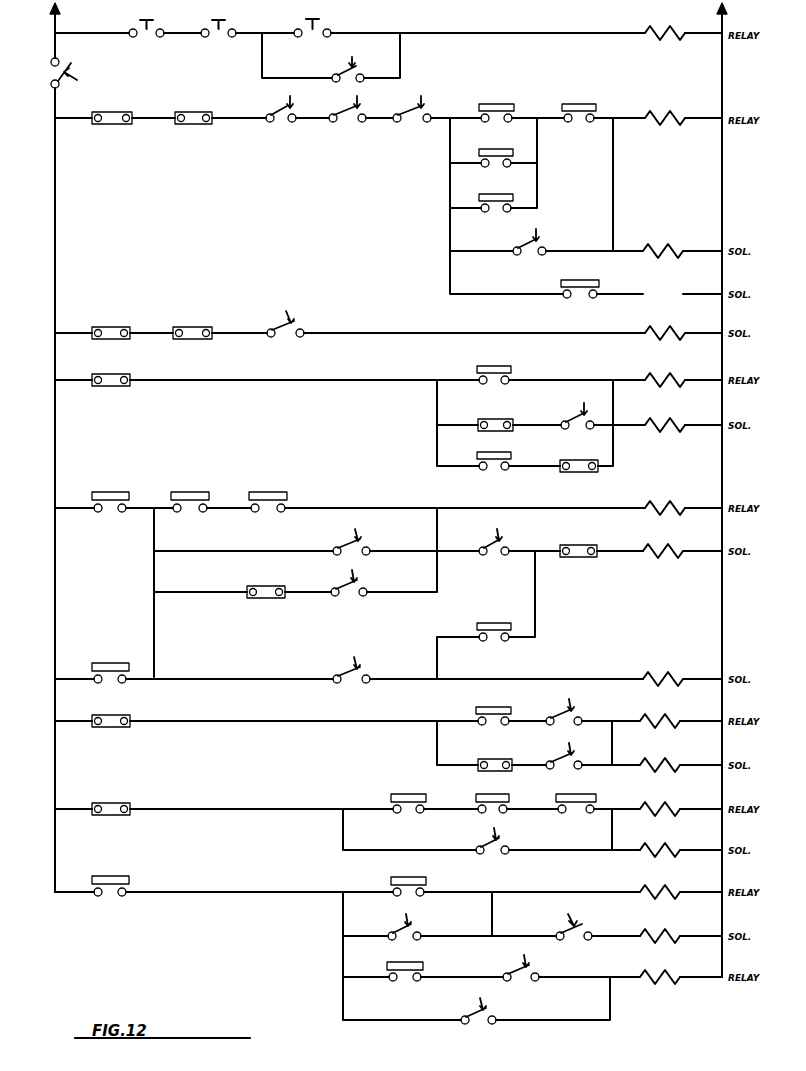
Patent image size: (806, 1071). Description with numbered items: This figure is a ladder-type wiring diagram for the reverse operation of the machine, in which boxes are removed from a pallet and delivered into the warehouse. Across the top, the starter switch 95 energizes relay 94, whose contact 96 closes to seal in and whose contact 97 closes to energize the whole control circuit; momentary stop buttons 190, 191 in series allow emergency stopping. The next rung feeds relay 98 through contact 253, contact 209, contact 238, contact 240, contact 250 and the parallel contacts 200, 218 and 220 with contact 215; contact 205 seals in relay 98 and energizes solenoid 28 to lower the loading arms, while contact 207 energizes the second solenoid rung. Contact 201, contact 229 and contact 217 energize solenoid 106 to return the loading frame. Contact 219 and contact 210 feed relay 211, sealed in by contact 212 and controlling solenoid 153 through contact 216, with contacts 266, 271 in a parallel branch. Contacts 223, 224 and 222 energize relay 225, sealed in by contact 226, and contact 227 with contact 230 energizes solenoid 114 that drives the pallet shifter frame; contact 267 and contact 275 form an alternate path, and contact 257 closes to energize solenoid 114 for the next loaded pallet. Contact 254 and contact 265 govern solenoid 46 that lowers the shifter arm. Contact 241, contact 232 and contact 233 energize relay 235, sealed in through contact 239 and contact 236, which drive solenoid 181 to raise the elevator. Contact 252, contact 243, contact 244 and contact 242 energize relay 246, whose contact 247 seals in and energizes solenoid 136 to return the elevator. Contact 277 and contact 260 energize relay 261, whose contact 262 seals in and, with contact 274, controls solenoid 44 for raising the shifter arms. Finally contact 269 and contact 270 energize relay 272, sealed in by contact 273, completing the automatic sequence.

The relay contact 97 is at (51, 73).
The momentary stop button 190 is at (146, 37).
The momentary stop button 191 is at (218, 37).
The starter switch 95 is at (322, 23).
The relay contact 96 is at (353, 68).
The relay 94 is at (665, 45).
The contact 253 is at (110, 129).
The contact 209 is at (191, 129).
The limit switch 238 is at (274, 121).
The contact 240 is at (342, 121).
The contact 250 is at (407, 121).
The contact 200 is at (496, 104).
The contact 215 is at (579, 104).
The relay 98 is at (665, 109).
The contact 218 is at (496, 149).
The contact 220 is at (496, 194).
The contact 205 is at (529, 253).
The solenoid 28 is at (674, 244).
The contact 207 is at (580, 299).
The contact 201 is at (111, 321).
The contact 229 is at (192, 321).
The contact 217 is at (288, 335).
The solenoid 106 is at (680, 326).
The contact 219 is at (111, 389).
The contact 210 is at (494, 366).
The relay 211 is at (680, 373).
The contact 216 is at (495, 413).
The contact 212 is at (579, 427).
The solenoid 153 is at (680, 418).
The contact 266 is at (492, 472).
The relay contact 271 is at (579, 476).
The contact 223 is at (110, 492).
The contact 224 is at (190, 492).
The contact 222 is at (268, 492).
The relay 225 is at (680, 501).
The contact 226 is at (362, 540).
The contact 227 is at (491, 553).
The contact 230 is at (578, 561).
The solenoid 114 is at (665, 561).
The relay contact 267 is at (262, 602).
The contact 275 is at (349, 594).
The contact 257 is at (494, 643).
The contact 254 is at (110, 664).
The contact 265 is at (351, 680).
The solenoid 46 is at (670, 671).
The contact 241 is at (111, 730).
The contact 232 is at (493, 707).
The contact 233 is at (576, 712).
The relay 235 is at (677, 713).
The contact 239 is at (495, 754).
The contact 236 is at (575, 756).
The solenoid 181 is at (676, 757).
The contact 252 is at (110, 817).
The contact 243 is at (408, 794).
The contact 244 is at (493, 794).
The contact 242 is at (576, 794).
The relay 246 is at (676, 801).
The contact 247 is at (490, 852).
The solenoid 136 is at (675, 841).
The contact 277 is at (109, 896).
The contact 260 is at (391, 884).
The relay 261 is at (675, 884).
The contact 262 is at (414, 926).
The contact 274 is at (574, 938).
The solenoid 44 is at (673, 927).
The contact 269 is at (403, 983).
The contact 270 is at (521, 979).
The relay 272 is at (669, 987).
The contact 273 is at (477, 1022).